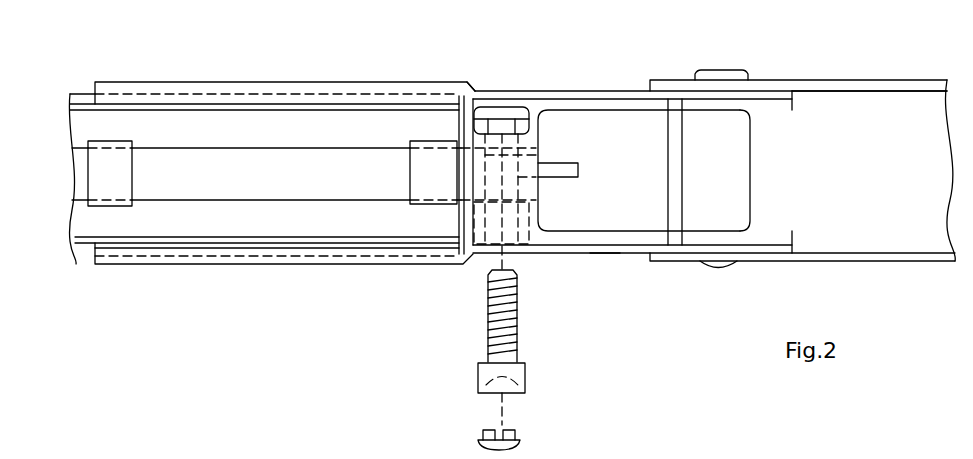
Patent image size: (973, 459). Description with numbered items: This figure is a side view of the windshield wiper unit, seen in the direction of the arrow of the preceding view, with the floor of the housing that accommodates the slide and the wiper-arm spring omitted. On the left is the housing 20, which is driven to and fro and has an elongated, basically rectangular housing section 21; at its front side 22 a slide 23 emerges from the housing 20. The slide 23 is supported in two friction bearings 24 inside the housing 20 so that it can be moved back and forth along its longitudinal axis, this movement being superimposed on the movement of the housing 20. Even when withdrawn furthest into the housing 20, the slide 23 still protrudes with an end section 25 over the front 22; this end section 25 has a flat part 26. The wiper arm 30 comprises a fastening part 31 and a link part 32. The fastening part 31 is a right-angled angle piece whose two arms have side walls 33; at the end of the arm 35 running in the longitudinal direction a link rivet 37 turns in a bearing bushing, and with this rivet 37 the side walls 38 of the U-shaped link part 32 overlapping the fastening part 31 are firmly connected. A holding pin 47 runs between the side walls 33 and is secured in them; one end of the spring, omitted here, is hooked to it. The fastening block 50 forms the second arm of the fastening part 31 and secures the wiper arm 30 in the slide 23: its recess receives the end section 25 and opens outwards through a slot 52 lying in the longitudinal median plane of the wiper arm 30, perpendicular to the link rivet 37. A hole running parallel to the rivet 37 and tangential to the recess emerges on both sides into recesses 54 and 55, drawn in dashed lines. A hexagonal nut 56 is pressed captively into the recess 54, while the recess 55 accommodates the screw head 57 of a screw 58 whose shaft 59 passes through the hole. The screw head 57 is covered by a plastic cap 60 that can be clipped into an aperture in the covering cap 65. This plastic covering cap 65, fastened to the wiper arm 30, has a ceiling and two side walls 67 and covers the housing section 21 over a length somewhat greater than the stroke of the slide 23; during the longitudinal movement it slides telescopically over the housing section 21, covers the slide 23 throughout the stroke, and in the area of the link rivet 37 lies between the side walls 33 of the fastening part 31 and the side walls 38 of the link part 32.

The housing 20 is at (87, 226).
The housing section 21 is at (312, 139).
The front side 22 is at (464, 99).
The slide 23 is at (258, 187).
The friction bearings 24 is at (123, 201).
The end section 25 is at (541, 148).
The flat part 26 is at (526, 177).
The wiper arm 30 is at (818, 75).
The fastening part 31 is at (599, 247).
The link part 32 is at (905, 230).
The side walls 33 is at (615, 101).
The arm 35 is at (743, 185).
The link rivet 37 is at (730, 268).
The side walls 38 is at (880, 80).
The holding pin 47 is at (678, 166).
The fastening block 50 is at (540, 218).
The slot 52 is at (579, 168).
The recess 54 is at (512, 107).
The recess 55 is at (522, 223).
The hexagonal nut 56 is at (495, 118).
The screw head 57 is at (523, 372).
The screw 58 is at (526, 349).
The shaft 59 is at (492, 305).
The plastic cap 60 is at (522, 446).
The covering cap 65 is at (389, 76).
The side walls 67 is at (253, 97).